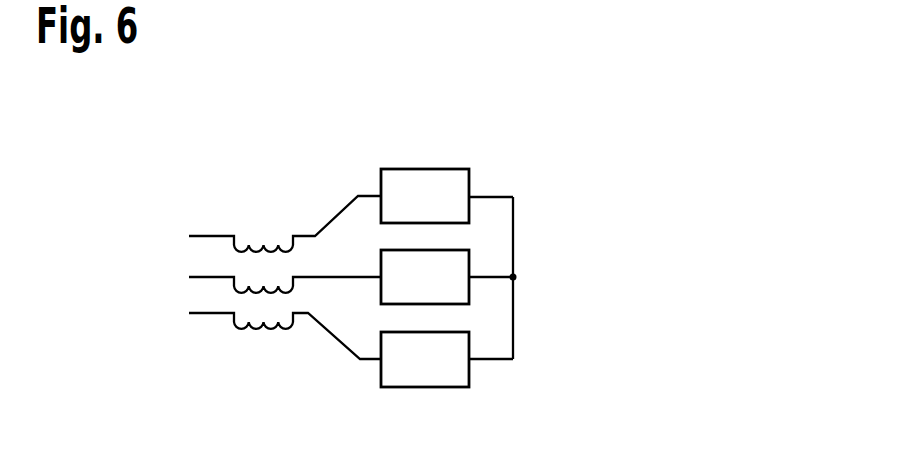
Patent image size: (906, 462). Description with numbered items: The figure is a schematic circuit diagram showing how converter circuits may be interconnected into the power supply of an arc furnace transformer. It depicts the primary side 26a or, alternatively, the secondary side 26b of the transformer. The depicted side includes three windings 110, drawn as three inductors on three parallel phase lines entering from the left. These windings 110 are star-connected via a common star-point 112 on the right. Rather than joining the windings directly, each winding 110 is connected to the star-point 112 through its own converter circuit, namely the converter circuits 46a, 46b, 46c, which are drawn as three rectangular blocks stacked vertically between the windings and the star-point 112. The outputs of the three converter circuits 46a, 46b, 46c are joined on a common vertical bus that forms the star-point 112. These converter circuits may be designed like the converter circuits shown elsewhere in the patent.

The primary side 26a is at (652, 165).
The secondary side 26b is at (285, 305).
The windings 110 is at (233, 247).
The converter circuit 46a is at (469, 209).
The converter circuit 46b is at (469, 292).
The converter circuit 46c is at (469, 372).
The star-point 112 is at (513, 277).